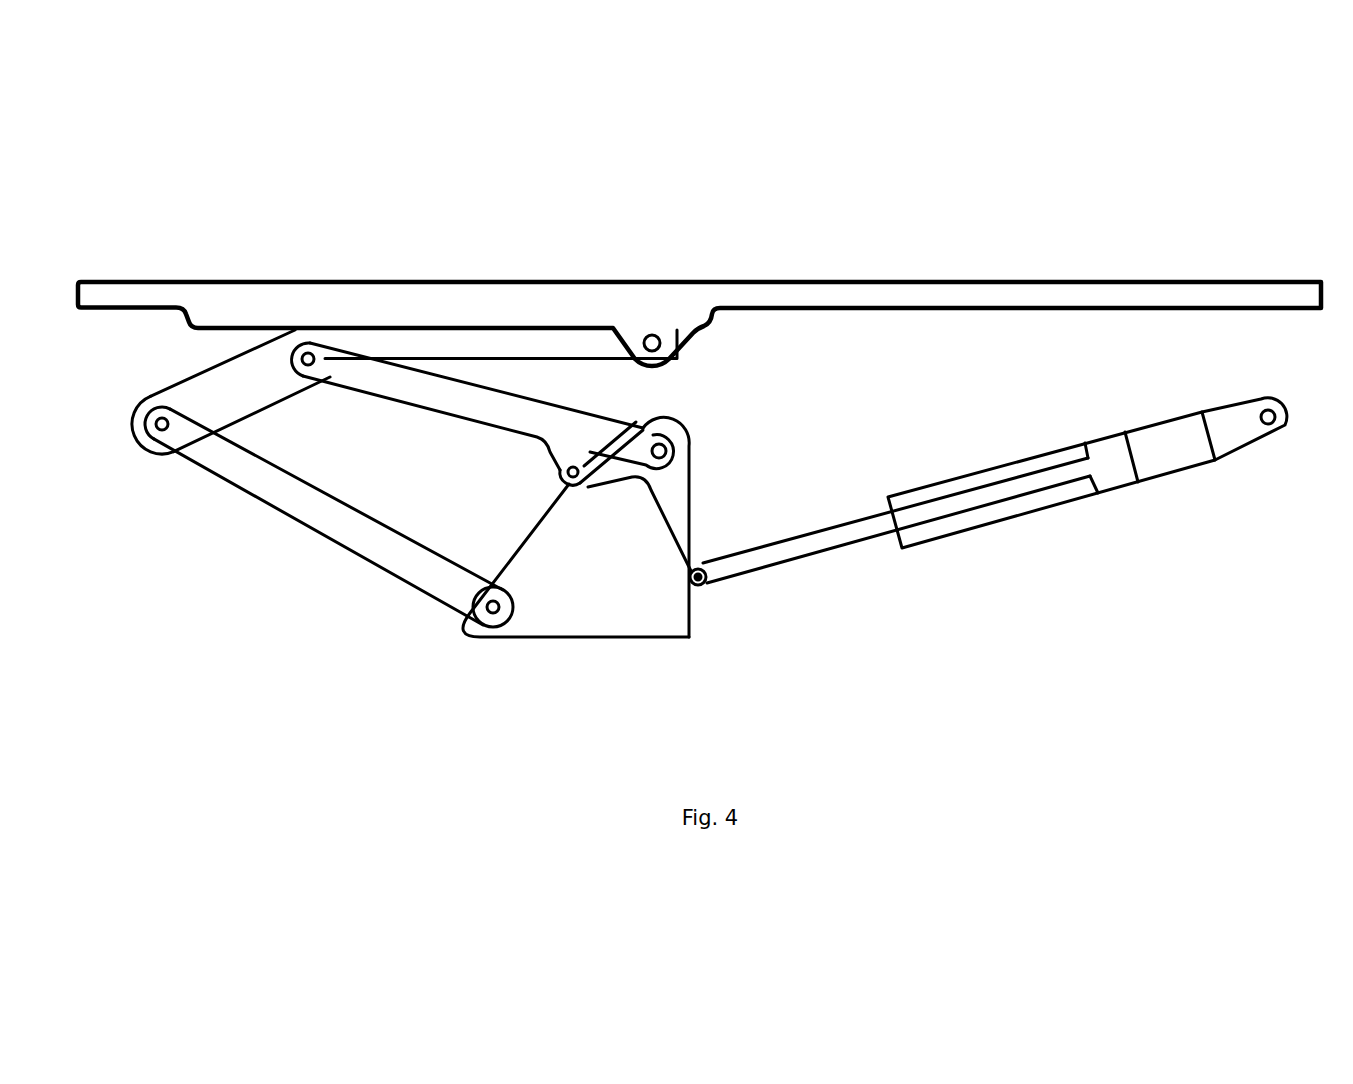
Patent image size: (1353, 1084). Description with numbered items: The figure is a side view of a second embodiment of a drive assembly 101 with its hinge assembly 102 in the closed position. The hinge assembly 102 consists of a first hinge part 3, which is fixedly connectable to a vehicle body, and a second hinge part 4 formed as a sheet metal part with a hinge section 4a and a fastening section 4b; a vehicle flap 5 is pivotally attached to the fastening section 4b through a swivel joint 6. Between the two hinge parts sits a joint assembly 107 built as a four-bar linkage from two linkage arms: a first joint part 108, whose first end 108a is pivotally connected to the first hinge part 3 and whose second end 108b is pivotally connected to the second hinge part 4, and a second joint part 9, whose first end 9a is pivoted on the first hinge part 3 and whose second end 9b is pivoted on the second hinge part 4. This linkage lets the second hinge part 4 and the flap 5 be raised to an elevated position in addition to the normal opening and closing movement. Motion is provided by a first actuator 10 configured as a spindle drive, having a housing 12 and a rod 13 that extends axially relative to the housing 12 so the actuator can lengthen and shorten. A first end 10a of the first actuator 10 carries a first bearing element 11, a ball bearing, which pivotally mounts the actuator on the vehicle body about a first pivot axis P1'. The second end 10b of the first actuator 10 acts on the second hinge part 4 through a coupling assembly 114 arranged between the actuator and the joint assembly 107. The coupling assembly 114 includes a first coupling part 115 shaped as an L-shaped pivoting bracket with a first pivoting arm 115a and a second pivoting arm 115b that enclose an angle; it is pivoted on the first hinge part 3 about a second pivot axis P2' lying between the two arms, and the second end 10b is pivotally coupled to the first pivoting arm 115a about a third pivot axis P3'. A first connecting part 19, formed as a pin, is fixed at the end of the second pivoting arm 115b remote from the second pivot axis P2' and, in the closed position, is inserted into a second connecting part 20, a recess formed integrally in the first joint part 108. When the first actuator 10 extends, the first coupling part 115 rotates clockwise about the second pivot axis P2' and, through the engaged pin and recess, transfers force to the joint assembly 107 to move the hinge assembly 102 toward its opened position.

The drive assembly 101 is at (868, 226).
The vehicle flap 5 is at (508, 292).
The swivel joint 6 is at (652, 334).
The second hinge part 4 is at (274, 345).
The hinge section 4a is at (195, 385).
The fastening section 4b is at (434, 340).
The second joint part 9 is at (327, 525).
The first end of second joint part 9a is at (478, 612).
The second end of second joint part 9b is at (174, 437).
The joint assembly 107 is at (353, 597).
The first joint part 108 is at (385, 382).
The first end of first joint part 108a is at (652, 438).
The second end of first joint part 108b is at (325, 355).
The second pivot axis P2' is at (700, 405).
The coupling assembly 114 is at (720, 450).
The first coupling part 115 is at (693, 497).
The first pivoting arm 115a is at (703, 560).
The second pivoting arm 115b is at (585, 457).
The first connecting part 19 is at (567, 480).
The second connecting part 20 is at (574, 484).
The first hinge part 3 is at (560, 620).
The hinge assembly 102 is at (623, 665).
The third pivot axis P3' is at (721, 609).
The second end of first actuator 10b is at (706, 582).
The rod 13 is at (830, 551).
The first actuator 10 is at (1058, 503).
The housing 12 is at (1138, 482).
The first bearing element 11 is at (1233, 440).
The first pivot axis P1' is at (1292, 461).
The first end of first actuator 10a is at (1193, 423).